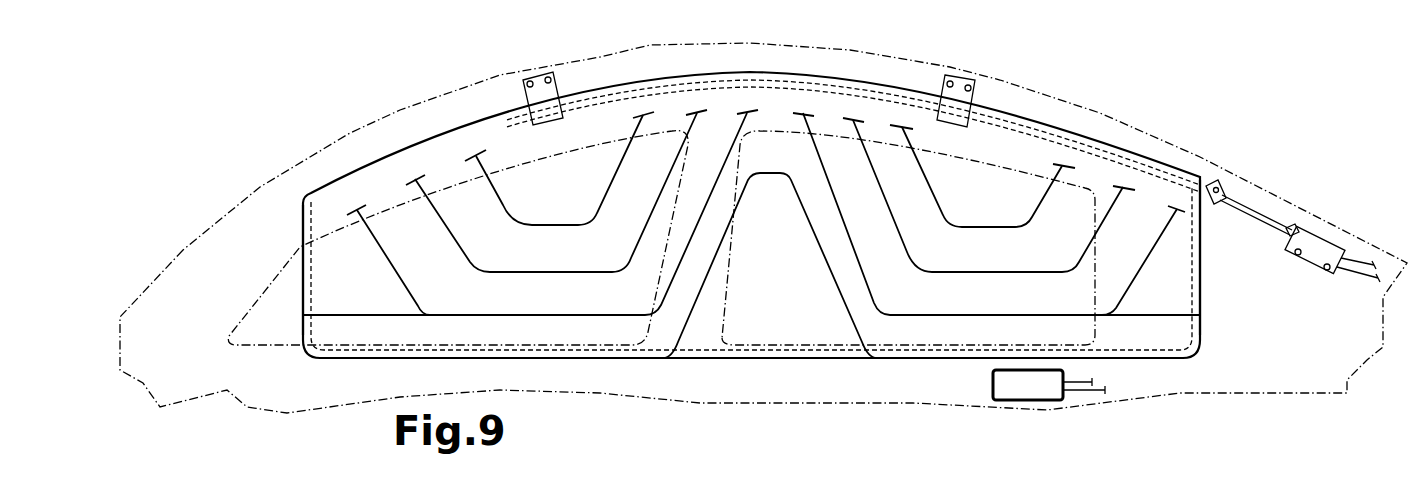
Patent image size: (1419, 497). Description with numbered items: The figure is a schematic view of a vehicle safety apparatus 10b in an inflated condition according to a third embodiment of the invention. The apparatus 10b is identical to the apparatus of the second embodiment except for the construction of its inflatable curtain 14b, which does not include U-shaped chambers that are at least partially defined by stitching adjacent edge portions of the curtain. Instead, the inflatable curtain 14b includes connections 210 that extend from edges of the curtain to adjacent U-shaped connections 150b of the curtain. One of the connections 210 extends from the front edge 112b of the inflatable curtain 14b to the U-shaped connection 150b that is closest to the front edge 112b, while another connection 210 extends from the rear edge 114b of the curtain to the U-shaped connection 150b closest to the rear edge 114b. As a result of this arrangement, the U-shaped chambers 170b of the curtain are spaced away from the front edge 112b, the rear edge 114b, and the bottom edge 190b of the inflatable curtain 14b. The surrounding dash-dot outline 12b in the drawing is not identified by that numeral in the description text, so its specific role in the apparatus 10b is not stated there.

The apparatus 10b is at (441, 59).
The vehicle body outline 12b is at (358, 150).
The inflatable curtain 14b is at (347, 290).
The front edge 112b is at (301, 245).
The rear edge 114b is at (1201, 293).
The U-shaped connections 150b is at (387, 260).
The U-shaped chambers 170b is at (507, 248).
The bottom edge 190b is at (563, 360).
The connections 210 is at (377, 316).